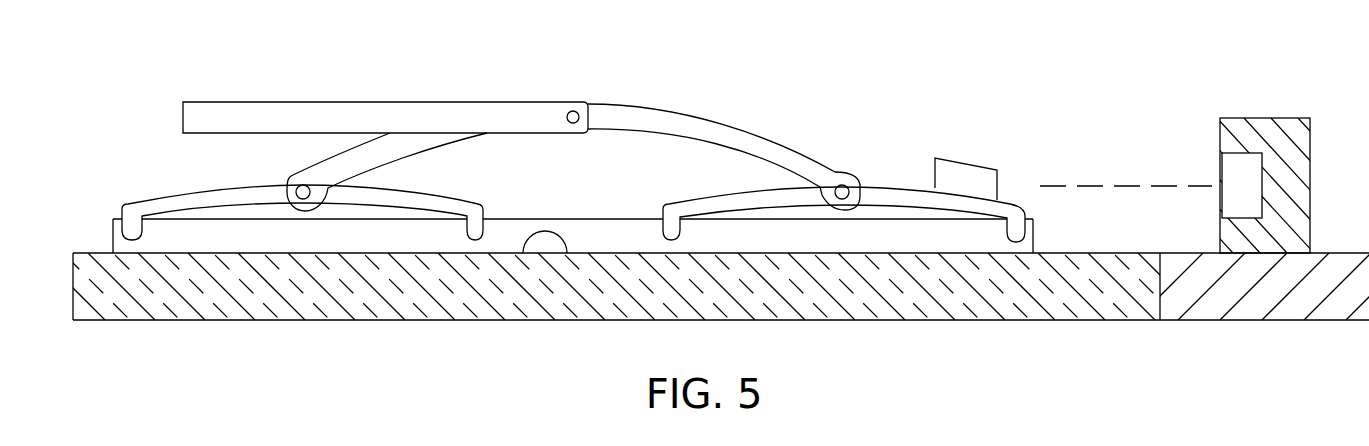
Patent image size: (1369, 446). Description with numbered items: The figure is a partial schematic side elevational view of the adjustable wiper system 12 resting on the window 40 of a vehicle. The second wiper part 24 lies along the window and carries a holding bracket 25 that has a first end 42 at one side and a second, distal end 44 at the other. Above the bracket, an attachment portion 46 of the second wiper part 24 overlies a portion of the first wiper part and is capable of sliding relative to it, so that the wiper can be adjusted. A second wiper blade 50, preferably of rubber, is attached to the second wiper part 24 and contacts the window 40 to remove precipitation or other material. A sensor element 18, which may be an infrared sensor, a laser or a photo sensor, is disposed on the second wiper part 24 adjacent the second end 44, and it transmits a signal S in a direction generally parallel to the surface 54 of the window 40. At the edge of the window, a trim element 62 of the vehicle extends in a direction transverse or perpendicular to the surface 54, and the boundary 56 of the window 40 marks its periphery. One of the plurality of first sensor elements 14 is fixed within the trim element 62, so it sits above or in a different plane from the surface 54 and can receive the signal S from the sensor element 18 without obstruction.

The adjustable wiper system 12 is at (790, 58).
The first sensor elements 14 is at (1232, 170).
The second sensor element 18 is at (960, 160).
The second wiper part 24 is at (609, 217).
The holding bracket 25 is at (613, 118).
The window 40 is at (1007, 322).
The first end 42 is at (112, 236).
The second end 44 is at (1033, 234).
The attachment portion 46 is at (266, 100).
The second wiper blade 50 is at (573, 258).
The surface 54 is at (538, 253).
The boundary 56 is at (1242, 322).
The trim element 62 is at (1283, 118).
The signal S is at (1090, 185).